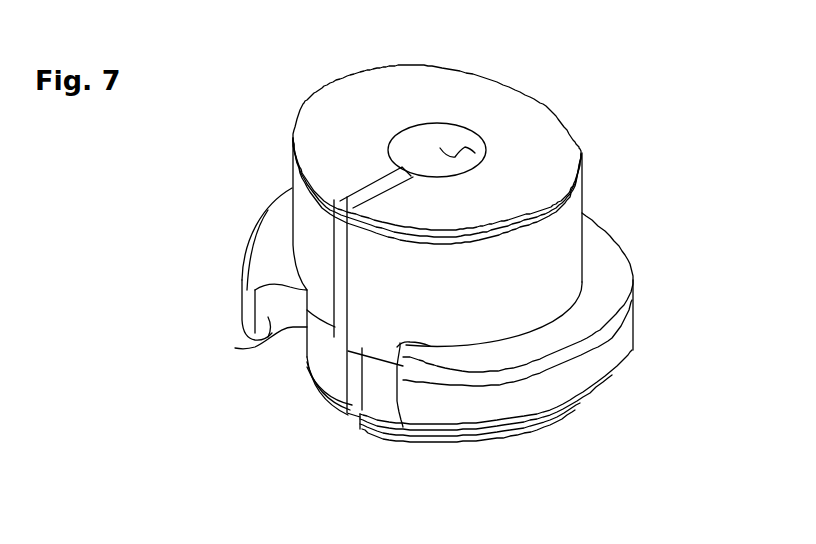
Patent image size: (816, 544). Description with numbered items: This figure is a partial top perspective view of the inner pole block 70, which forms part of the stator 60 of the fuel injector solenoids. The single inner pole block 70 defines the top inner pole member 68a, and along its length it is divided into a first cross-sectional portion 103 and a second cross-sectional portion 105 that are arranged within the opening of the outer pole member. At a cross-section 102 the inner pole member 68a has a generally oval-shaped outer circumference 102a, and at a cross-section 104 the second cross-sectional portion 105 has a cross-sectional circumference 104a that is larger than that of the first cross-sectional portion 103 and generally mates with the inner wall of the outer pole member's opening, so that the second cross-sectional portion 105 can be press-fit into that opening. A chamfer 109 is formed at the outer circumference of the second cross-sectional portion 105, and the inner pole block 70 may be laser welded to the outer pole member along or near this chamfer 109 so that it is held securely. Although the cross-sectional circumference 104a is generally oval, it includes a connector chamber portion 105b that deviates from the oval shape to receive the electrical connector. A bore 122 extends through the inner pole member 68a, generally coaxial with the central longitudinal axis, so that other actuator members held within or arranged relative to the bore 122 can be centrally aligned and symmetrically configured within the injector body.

The stator 60 is at (355, 79).
The inner pole member 68a is at (323, 118).
The inner pole block 70 is at (294, 348).
The cross-section 102 is at (520, 104).
The outer circumference 102a is at (440, 68).
The first cross-sectional portion 103 is at (567, 246).
The cross-section 104 is at (403, 427).
The cross-sectional circumference 104a is at (577, 362).
The second cross-sectional portion 105 is at (472, 403).
The connector chamber portion 105b is at (260, 348).
The chamfer 109 is at (252, 280).
The bore 122 is at (450, 127).